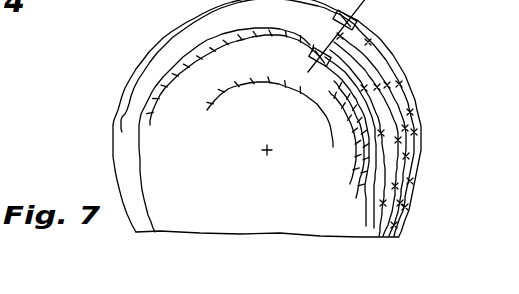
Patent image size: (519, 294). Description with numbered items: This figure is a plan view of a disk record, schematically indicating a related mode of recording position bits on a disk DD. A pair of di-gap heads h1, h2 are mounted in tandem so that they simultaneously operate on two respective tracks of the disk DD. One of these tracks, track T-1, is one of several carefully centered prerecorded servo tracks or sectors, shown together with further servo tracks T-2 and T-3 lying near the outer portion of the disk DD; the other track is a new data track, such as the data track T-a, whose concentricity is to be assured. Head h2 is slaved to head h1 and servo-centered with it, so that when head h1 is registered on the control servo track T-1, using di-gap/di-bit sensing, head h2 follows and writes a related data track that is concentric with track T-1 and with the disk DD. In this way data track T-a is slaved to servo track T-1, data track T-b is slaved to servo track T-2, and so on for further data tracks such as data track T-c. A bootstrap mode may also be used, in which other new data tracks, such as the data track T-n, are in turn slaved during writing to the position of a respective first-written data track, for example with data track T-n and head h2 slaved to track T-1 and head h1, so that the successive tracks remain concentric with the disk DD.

The disk DD is at (407, 61).
The track T-1 is at (403, 141).
The track T-2 is at (403, 165).
The track T-3 is at (410, 193).
The data track T-a is at (150, 125).
The data track T-b is at (356, 198).
The data track T-c is at (350, 184).
The data track T-n is at (207, 110).
The di-gap head h1 is at (357, 24).
The di-gap head h2 is at (310, 57).